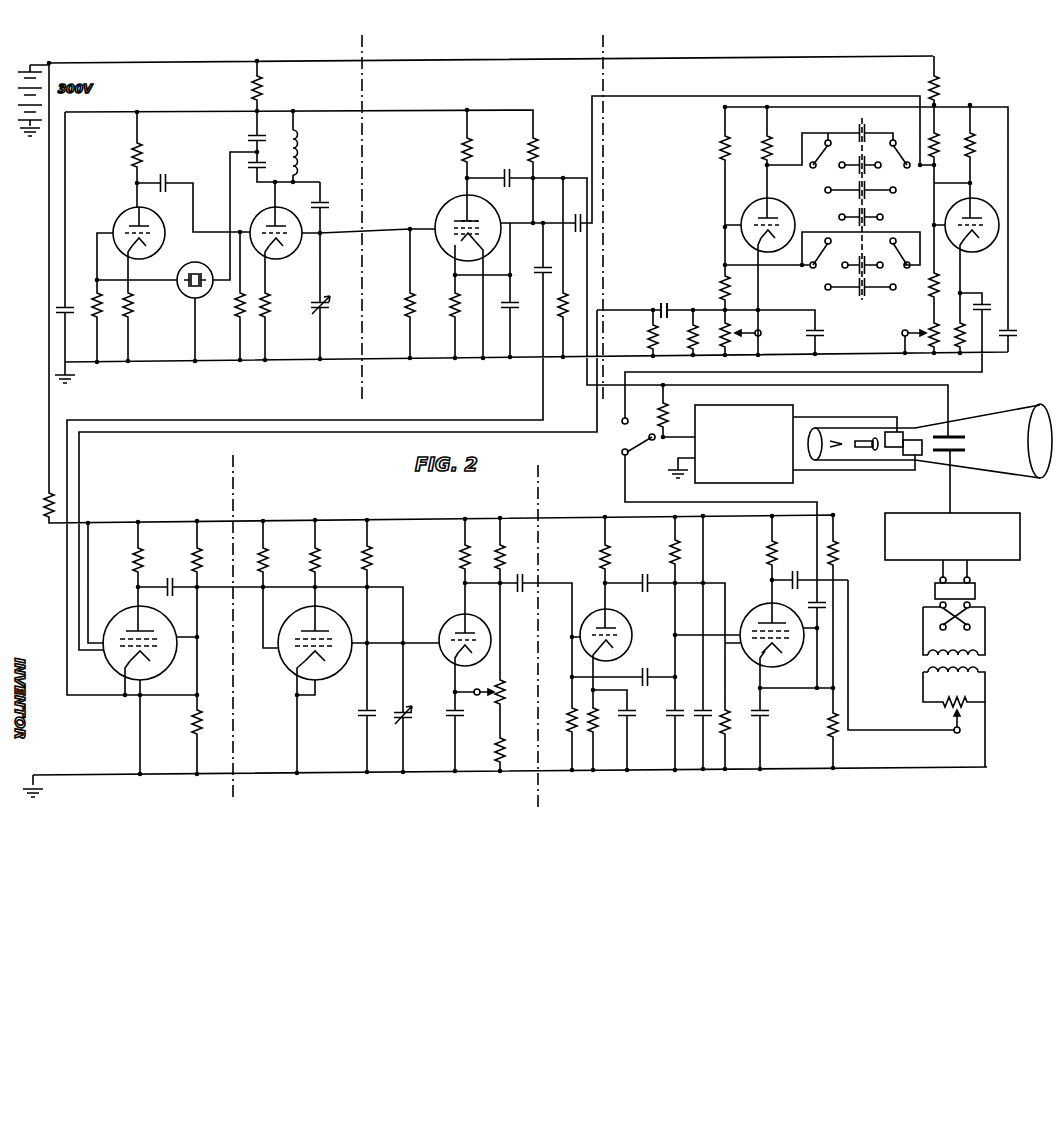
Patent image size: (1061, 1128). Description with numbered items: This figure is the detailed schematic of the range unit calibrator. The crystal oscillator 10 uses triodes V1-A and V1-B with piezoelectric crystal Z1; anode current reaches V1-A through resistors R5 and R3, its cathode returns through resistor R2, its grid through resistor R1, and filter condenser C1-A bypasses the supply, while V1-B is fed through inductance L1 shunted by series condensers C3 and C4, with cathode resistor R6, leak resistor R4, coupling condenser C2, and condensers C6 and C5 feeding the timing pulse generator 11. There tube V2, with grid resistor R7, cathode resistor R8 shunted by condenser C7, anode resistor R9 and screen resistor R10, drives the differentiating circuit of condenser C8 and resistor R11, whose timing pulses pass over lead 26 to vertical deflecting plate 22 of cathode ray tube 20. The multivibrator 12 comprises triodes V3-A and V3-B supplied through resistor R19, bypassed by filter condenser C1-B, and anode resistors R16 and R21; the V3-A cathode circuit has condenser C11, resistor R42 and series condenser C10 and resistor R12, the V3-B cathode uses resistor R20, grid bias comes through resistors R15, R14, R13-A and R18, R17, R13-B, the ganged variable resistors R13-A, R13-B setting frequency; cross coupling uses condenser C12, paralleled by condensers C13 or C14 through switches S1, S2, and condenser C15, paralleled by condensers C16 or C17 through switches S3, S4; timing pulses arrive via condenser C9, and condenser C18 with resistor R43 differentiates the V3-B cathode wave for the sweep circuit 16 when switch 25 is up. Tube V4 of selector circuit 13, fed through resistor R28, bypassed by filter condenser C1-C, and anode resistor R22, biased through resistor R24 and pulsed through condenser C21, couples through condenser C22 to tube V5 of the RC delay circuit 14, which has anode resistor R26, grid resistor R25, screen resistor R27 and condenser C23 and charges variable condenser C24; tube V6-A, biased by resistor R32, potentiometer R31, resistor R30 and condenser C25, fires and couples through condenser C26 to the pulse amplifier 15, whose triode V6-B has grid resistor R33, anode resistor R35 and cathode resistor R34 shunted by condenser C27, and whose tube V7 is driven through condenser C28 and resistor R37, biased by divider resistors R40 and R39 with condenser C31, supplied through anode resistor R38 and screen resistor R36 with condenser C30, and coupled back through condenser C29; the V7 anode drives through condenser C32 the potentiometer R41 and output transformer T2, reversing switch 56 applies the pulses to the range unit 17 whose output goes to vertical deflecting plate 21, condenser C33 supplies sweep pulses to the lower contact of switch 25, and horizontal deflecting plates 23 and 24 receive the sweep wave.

The crystal oscillator 10 is at (172, 68).
The timing pulse generator 11 is at (458, 67).
The multivibrator 12 is at (789, 59).
The selector 13 is at (121, 800).
The R-C delay circuit 14 is at (394, 796).
The pulse amplifier 15 is at (769, 793).
The sweep circuit 16 is at (778, 410).
The range unit under test 17 is at (1020, 530).
The cathode ray tube 20 is at (1030, 412).
The deflection plate 21 is at (958, 452).
The deflection plate 22 is at (960, 434).
The deflection plate 23 is at (914, 456).
The deflection plate 24 is at (908, 430).
The switch 25 is at (622, 452).
The electron gun 26 is at (838, 399).
The connector plug 56 is at (980, 597).
The transformer T2 is at (920, 665).
The inductor L1 is at (307, 152).
The crystal Z1 is at (183, 277).
The vacuum tube section V1-A is at (123, 227).
The vacuum tube section V1-B is at (269, 227).
The vacuum tube V2 is at (455, 228).
The vacuum tube section V3-A is at (762, 222).
The vacuum tube section V3-B is at (968, 222).
The vacuum tube V4 is at (138, 633).
The vacuum tube V5 is at (315, 633).
The vacuum tube section V6-A is at (455, 633).
The vacuum tube section V6-B is at (612, 631).
The vacuum tube V7 is at (771, 624).
The switch S1 is at (812, 172).
The switch S2 is at (903, 170).
The switch S3 is at (812, 272).
The switch S4 is at (903, 266).
The resistor R1 is at (87, 312).
The resistor R2 is at (119, 312).
The resistor R3 is at (121, 155).
The resistor R4 is at (229, 312).
The resistor R5 is at (241, 88).
The resistor R6 is at (275, 312).
The resistor R7 is at (397, 312).
The resistor R8 is at (444, 312).
The resistor R9 is at (448, 150).
The resistor R10 is at (518, 150).
The resistor R11 is at (558, 334).
The resistor R12 is at (637, 337).
The potentiometer R13-A is at (732, 330).
The potentiometer R13-B is at (930, 326).
The resistor R14 is at (722, 276).
The resistor R15 is at (711, 148).
The resistor R16 is at (754, 148).
The resistor R17 is at (930, 282).
The resistor R18 is at (947, 142).
The resistor R19 is at (916, 86).
The resistor R20 is at (960, 348).
The resistor R21 is at (984, 142).
The resistor R22 is at (121, 555).
The resistor R24 is at (181, 555).
The resistor R25 is at (265, 548).
The resistor R26 is at (312, 558).
The resistor R27 is at (350, 554).
The resistor R28 is at (35, 499).
The resistor R30 is at (483, 748).
The potentiometer R31 is at (482, 690).
The resistor R32 is at (486, 553).
The resistor R33 is at (561, 725).
The resistor R34 is at (606, 725).
The resistor R35 is at (587, 553).
The resistor R36 is at (660, 548).
The resistor R37 is at (741, 726).
The resistor R38 is at (768, 553).
The resistor R39 is at (829, 718).
The resistor R40 is at (829, 553).
The potentiometer R41 is at (943, 715).
The resistor R42 is at (693, 318).
The resistor R43 is at (668, 412).
The capacitor C1-A is at (78, 305).
The capacitor C1-B is at (1022, 327).
The capacitor C1-C is at (697, 724).
The capacitor C2 is at (162, 176).
The capacitor C3 is at (252, 175).
The capacitor C4 is at (244, 134).
The variable capacitor C5 is at (310, 297).
The capacitor C6 is at (330, 205).
The capacitor C7 is at (503, 298).
The capacitor C8 is at (493, 183).
The capacitor C9 is at (580, 214).
The capacitor C10 is at (664, 304).
The capacitor C11 is at (833, 333).
The capacitor C12 is at (849, 127).
The capacitor C13 is at (856, 158).
The capacitor C14 is at (860, 186).
The capacitor C15 is at (854, 217).
The capacitor C16 is at (858, 260).
The capacitor C17 is at (860, 284).
The capacitor C18 is at (985, 294).
The capacitor C21 is at (531, 268).
The capacitor C22 is at (166, 579).
The capacitor C23 is at (358, 711).
The variable capacitor C24 is at (398, 716).
The capacitor C25 is at (446, 712).
The capacitor C26 is at (517, 595).
The capacitor C27 is at (637, 724).
The capacitor C28 is at (638, 575).
The capacitor C29 is at (645, 667).
The capacitor C30 is at (670, 712).
The capacitor C31 is at (771, 724).
The capacitor C32 is at (793, 573).
The capacitor C33 is at (828, 605).